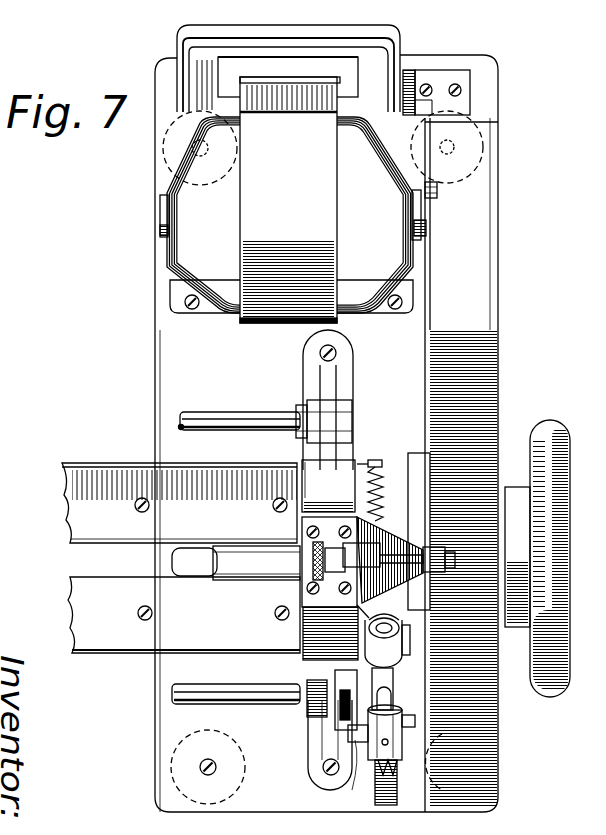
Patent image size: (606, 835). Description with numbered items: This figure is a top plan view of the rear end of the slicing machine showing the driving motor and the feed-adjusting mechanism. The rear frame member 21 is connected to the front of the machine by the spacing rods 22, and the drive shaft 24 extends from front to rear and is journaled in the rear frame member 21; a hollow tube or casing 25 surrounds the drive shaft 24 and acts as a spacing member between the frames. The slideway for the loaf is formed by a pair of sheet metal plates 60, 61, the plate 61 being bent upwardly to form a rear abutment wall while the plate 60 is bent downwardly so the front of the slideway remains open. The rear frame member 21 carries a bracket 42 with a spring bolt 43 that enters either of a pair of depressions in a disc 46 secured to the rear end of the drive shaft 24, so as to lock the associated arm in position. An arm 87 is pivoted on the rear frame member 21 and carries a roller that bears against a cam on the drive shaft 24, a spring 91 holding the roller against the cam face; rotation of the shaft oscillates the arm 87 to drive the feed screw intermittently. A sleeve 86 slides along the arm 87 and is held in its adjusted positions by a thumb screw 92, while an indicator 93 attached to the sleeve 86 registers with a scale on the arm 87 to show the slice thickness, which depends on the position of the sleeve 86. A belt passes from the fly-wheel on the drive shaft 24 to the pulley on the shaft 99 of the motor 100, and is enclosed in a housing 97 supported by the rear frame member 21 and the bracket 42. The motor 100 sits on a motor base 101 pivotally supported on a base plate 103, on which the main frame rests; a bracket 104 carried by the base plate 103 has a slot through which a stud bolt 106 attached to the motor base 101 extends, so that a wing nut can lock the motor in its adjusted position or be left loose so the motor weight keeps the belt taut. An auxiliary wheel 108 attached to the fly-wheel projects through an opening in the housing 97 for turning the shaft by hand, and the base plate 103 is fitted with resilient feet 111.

The motor base 101 is at (196, 72).
The stud bolt 106 is at (422, 92).
The bracket 104 is at (446, 80).
The motor shaft 99 is at (421, 226).
The motor 100 is at (202, 243).
The base plate 103 is at (173, 347).
The housing 97 is at (470, 392).
The spacing rods 22 is at (226, 413).
The sheet metal plate 61 is at (96, 480).
The rear frame member 21 is at (334, 472).
The spring 91 is at (383, 490).
The bracket 42 is at (396, 548).
The drive shaft 24 is at (188, 556).
The hollow tube or casing 25 is at (232, 547).
The spring bolt 43 is at (346, 570).
The auxiliary wheel 108 is at (548, 526).
The disc 46 is at (420, 652).
The arm 87 is at (384, 692).
The sheet metal plate 60 is at (118, 632).
The resilient feet 111 is at (196, 748).
The thumb screw 92 is at (312, 750).
The sleeve 86 is at (366, 742).
The indicator 93 is at (386, 772).